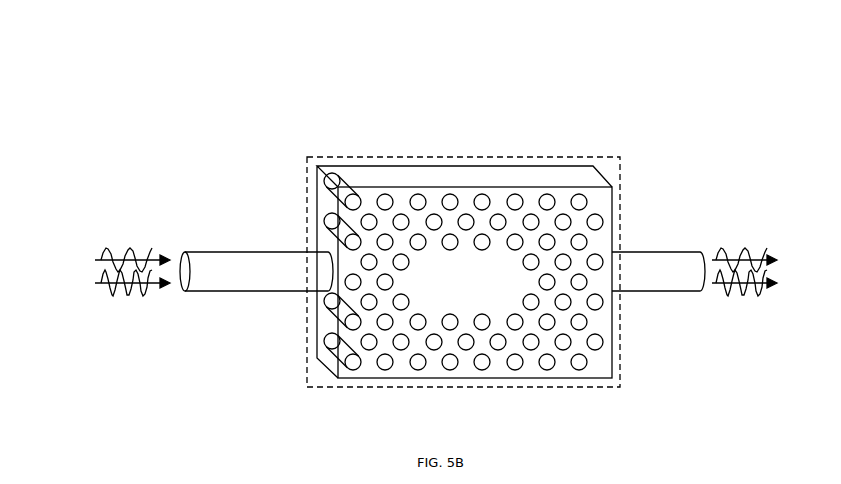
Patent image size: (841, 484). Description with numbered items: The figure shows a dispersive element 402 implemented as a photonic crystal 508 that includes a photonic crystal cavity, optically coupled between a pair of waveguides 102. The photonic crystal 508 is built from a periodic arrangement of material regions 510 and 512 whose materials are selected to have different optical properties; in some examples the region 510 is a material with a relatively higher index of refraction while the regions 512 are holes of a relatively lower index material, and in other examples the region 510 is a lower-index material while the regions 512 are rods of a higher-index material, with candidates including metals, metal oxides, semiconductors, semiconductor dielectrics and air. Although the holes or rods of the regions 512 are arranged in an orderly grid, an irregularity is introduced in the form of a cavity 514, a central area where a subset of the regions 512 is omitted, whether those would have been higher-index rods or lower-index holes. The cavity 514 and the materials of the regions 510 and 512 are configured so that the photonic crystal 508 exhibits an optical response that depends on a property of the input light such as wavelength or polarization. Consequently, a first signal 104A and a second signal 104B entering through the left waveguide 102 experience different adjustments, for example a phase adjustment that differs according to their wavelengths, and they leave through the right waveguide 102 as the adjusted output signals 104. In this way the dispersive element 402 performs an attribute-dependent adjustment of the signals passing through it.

The dispersive element 402 is at (473, 69).
The photonic crystal 508 is at (317, 158).
The material region 510 is at (317, 213).
The material regions 512 is at (574, 411).
The cavity 514 is at (479, 288).
The waveguide 102 is at (267, 279).
The first signal 104A is at (101, 260).
The second signal 104B is at (101, 283).
The signals 104 is at (778, 260).